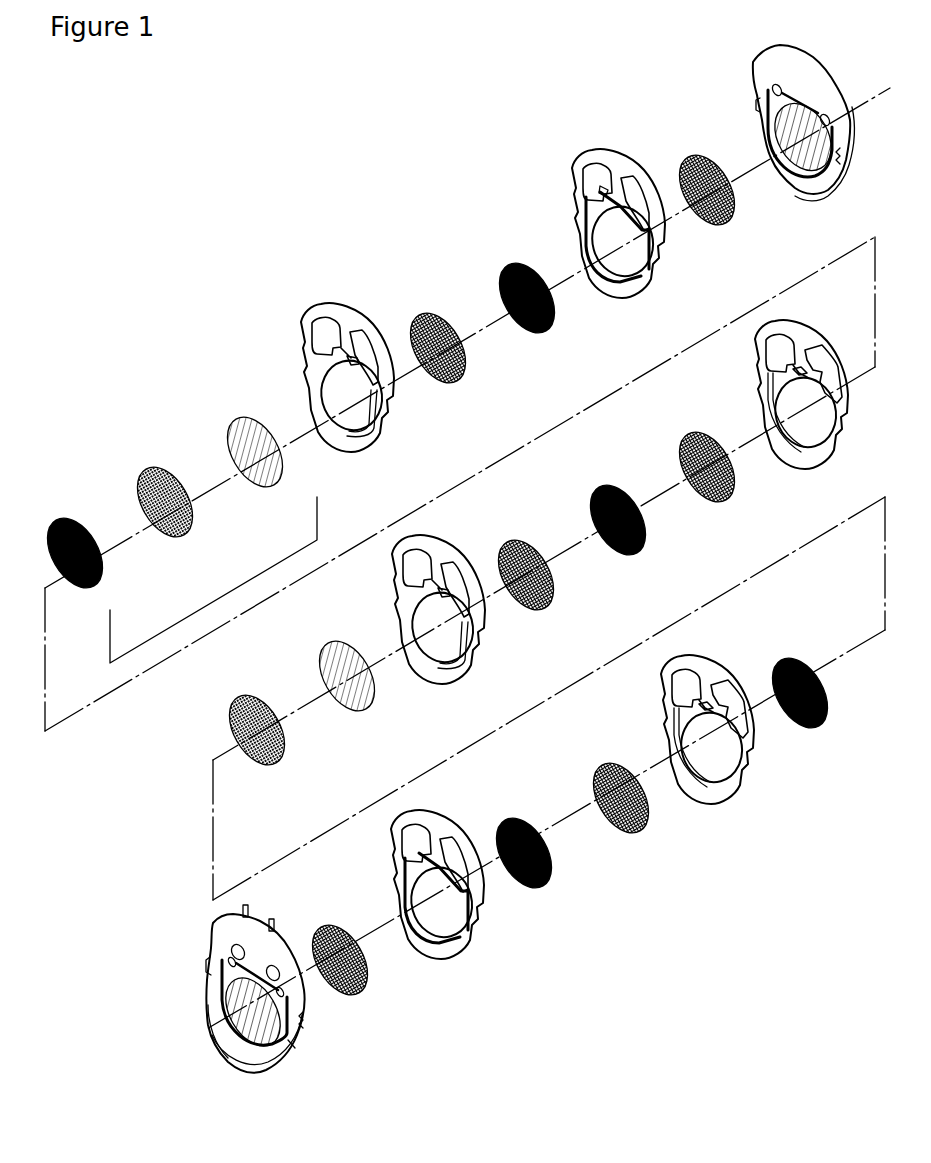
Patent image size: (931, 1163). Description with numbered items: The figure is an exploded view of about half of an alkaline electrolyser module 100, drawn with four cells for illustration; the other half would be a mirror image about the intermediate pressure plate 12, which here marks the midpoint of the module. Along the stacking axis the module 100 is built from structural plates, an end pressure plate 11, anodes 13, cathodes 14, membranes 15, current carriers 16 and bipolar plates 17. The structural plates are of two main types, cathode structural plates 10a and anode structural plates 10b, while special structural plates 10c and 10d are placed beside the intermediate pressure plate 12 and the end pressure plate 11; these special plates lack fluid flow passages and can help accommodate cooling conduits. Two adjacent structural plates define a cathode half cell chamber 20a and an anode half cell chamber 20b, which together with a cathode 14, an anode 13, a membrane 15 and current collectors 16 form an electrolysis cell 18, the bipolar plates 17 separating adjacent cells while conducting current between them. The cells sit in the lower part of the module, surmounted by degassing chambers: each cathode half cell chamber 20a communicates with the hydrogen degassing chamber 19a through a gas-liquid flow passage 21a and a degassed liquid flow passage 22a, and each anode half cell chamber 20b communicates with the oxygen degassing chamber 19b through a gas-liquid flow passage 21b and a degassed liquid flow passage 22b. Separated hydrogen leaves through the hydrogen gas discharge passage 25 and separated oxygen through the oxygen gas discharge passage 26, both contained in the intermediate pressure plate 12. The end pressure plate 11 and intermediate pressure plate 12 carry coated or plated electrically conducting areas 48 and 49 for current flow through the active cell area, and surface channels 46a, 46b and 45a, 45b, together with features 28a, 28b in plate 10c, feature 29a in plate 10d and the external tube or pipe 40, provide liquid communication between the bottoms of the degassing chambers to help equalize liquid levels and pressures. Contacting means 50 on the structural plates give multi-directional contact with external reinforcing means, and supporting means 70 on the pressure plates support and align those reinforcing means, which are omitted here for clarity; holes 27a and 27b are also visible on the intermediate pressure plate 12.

The alkaline electrolyser module 100 is at (295, 138).
The cathode structural plate 10a is at (820, 460).
The anode structural plate 10b is at (337, 433).
The special structural plate 10c is at (458, 958).
The special structural plate 10d is at (647, 290).
The end pressure plate 11 is at (827, 190).
The intermediate pressure plate 12 is at (240, 1052).
The anode 13 is at (281, 483).
The cathode 14 is at (97, 583).
The membrane 15 is at (187, 530).
The current carrier 16 is at (462, 376).
The bipolar plate 17 is at (548, 328).
The electrolysis cell 18 is at (213, 580).
The hydrogen degassing chamber 19a is at (330, 330).
The oxygen degassing chamber 19b is at (355, 350).
The cathode half cell chamber 20a is at (817, 430).
The anode half cell chamber 20b is at (360, 413).
The gas-liquid flow passage 21a is at (793, 367).
The gas-liquid flow passage 21b is at (358, 360).
The degassed liquid flow passage 22a is at (765, 415).
The degassed liquid flow passage 22b is at (380, 413).
The hydrogen gas discharge passage 25 is at (272, 925).
The oxygen gas discharge passage 26 is at (247, 910).
The hole 27a is at (233, 950).
The hole 27b is at (280, 970).
The liquid communication passage feature 28a is at (433, 863).
The liquid communication passage feature 28b is at (625, 282).
The liquid communication passage feature 29a is at (603, 188).
The tube or pipe 40 is at (223, 1040).
The liquid communication passage feature 45a is at (225, 993).
The liquid communication passage feature 45b is at (265, 1010).
The liquid communication passage feature 46a is at (822, 113).
The liquid communication passage feature 46b is at (807, 177).
The electrically conducting area 48 is at (790, 127).
The electrically conducting area 49 is at (290, 1050).
The contacting means 50 is at (308, 375).
The supporting means 70 is at (757, 113).